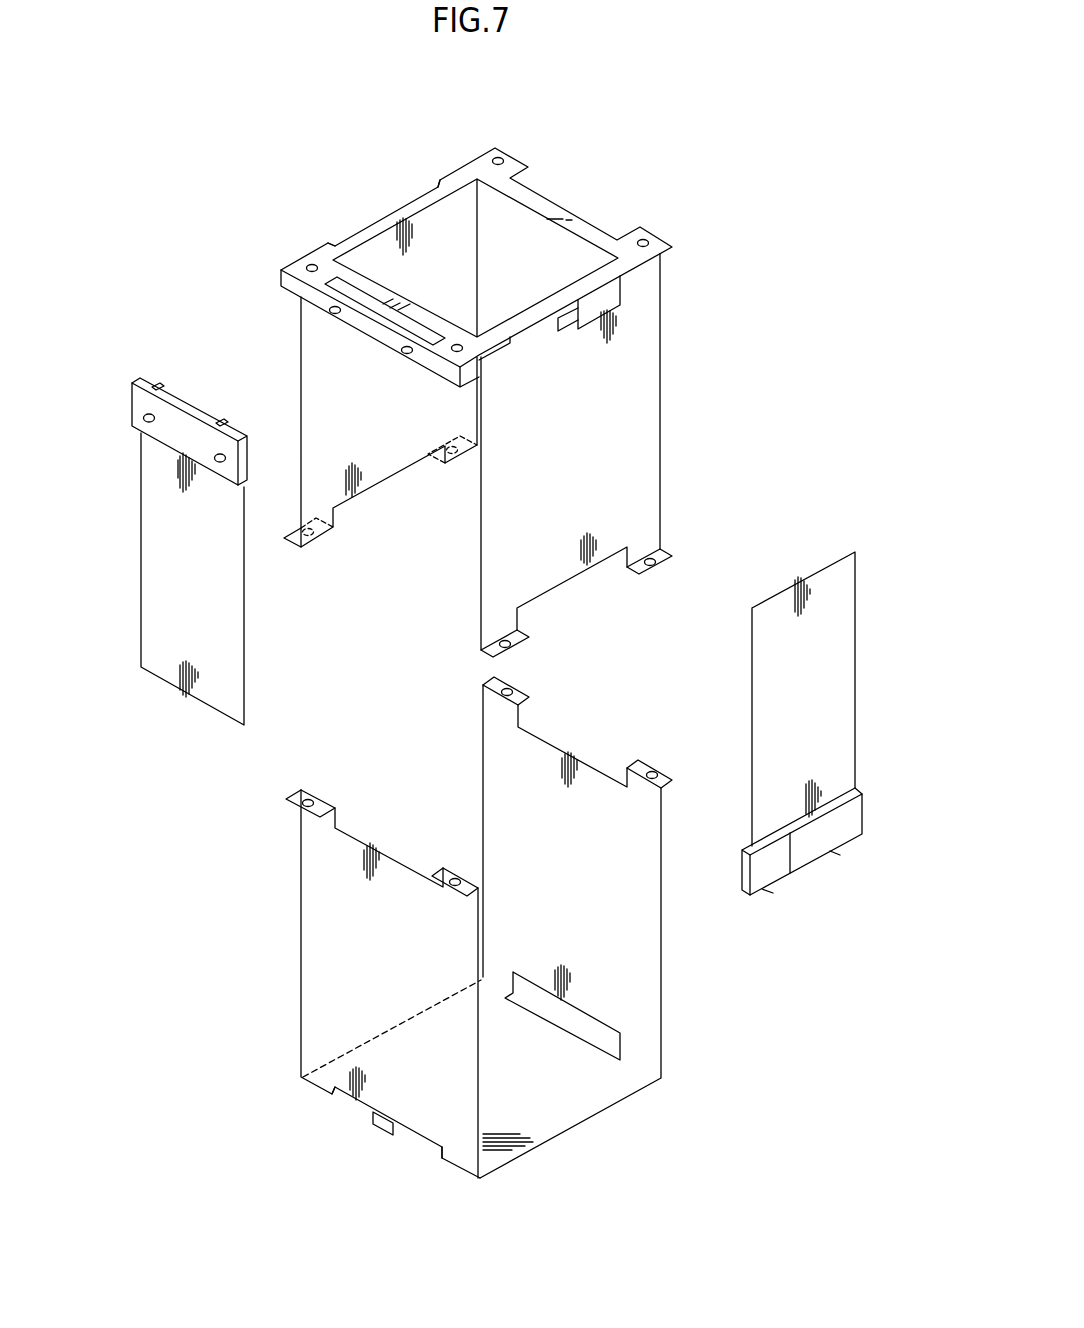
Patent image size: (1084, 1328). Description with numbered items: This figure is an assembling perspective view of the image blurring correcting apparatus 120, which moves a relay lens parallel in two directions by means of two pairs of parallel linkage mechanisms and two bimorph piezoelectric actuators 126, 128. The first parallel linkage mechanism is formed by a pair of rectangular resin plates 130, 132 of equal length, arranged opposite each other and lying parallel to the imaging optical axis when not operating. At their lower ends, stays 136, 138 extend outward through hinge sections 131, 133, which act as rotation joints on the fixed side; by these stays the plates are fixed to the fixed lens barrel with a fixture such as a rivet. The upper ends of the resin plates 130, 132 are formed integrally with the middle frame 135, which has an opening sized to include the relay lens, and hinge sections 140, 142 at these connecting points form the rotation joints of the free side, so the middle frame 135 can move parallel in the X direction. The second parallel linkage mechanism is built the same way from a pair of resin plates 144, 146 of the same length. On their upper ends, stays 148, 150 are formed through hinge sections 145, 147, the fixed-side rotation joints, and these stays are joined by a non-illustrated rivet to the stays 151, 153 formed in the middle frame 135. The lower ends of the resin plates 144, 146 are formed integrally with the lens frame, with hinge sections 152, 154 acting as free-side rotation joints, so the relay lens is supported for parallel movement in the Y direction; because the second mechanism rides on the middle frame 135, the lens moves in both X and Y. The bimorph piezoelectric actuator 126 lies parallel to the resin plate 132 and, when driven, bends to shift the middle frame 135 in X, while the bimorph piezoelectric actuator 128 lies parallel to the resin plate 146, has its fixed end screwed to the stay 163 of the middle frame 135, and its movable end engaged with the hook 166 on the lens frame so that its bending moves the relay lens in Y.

The image blurring correcting apparatus 120 is at (196, 209).
The bimorph piezoelectric actuator 126 is at (840, 703).
The bimorph piezoelectric actuator 128 is at (163, 561).
The resin plate 130 is at (378, 460).
The hinge section 131 is at (470, 468).
The resin plate 132 is at (643, 430).
The hinge section 133 is at (668, 557).
The middle frame 135 is at (543, 207).
The stay 136 is at (445, 462).
The stay 138 is at (655, 573).
The hinge section 140 is at (447, 181).
The hinge section 142 is at (628, 274).
The resin plate 144 is at (652, 916).
The hinge section 145 is at (500, 704).
The resin plate 146 is at (318, 990).
The hinge section 147 is at (322, 792).
The stay 148 is at (523, 693).
The stay 150 is at (286, 805).
The stay 151 is at (520, 166).
The hinge section 152 is at (497, 988).
The stay 153 is at (303, 273).
The hinge section 154 is at (322, 1090).
The stay 163 is at (373, 331).
The hook 166 is at (377, 1130).